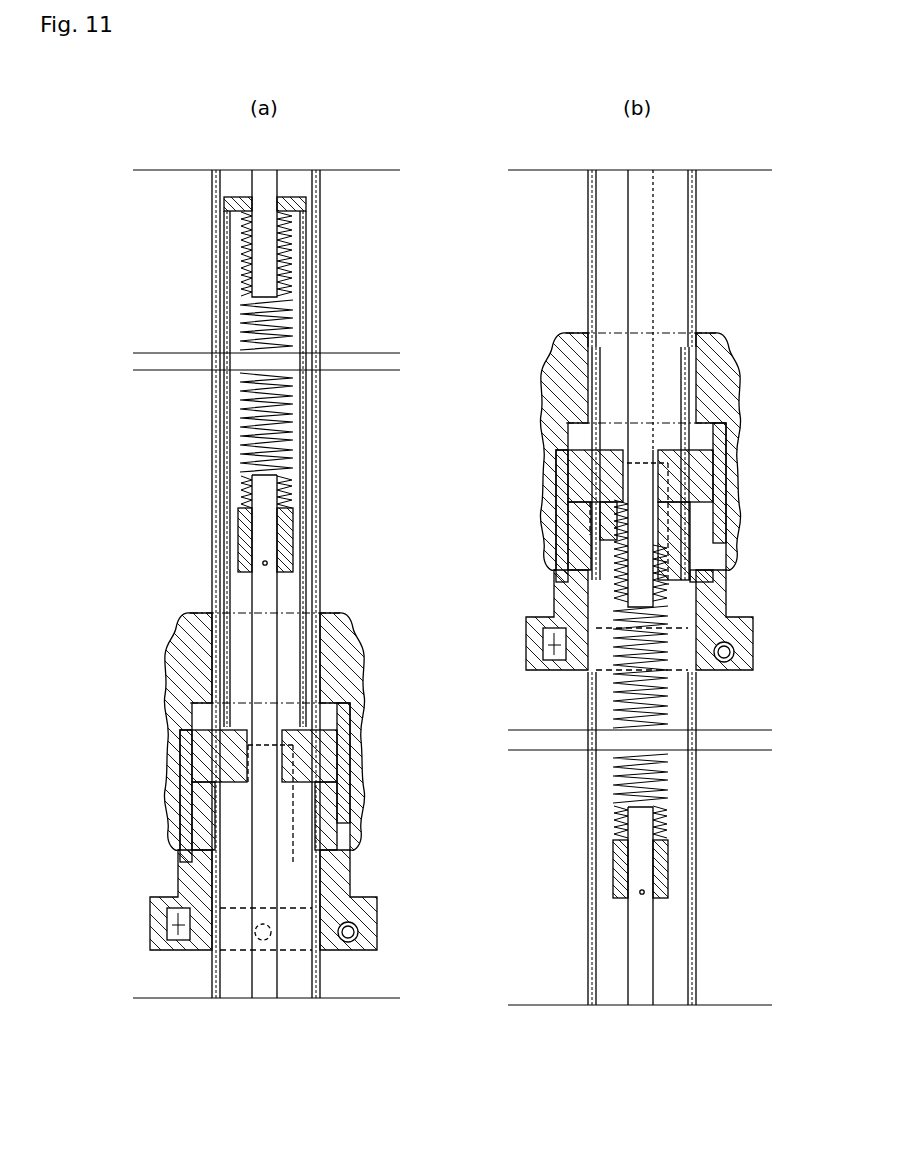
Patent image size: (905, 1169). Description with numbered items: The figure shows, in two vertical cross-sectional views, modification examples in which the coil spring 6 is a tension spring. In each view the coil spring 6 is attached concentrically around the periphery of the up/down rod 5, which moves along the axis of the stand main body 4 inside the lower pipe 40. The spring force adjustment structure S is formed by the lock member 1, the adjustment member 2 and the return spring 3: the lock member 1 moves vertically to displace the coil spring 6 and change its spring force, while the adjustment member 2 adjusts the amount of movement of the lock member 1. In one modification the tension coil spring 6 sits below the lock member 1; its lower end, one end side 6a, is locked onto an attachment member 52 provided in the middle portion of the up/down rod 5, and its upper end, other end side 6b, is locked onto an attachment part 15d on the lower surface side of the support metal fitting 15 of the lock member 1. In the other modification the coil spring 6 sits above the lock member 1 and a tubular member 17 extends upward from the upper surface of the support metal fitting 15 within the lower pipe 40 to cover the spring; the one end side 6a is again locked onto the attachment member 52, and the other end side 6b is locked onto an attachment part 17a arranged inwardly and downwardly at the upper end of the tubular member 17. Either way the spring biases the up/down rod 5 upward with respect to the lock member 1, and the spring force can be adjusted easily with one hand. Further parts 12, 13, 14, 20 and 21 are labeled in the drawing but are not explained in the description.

The lock member 1 is at (360, 667).
The adjustment member 2 is at (350, 880).
The return spring 3 is at (377, 928).
The stand main body 4 is at (504, 587).
The up/down rod 5 is at (272, 590).
The coil spring 6 is at (477, 542).
The one end side 6a is at (291, 548).
The other end side 6b is at (290, 210).
The sleeve portion 12 is at (411, 680).
The sleeve 13 is at (178, 822).
The ring member 14 is at (365, 812).
The support metal fitting 15 is at (496, 656).
The attachment part 15d is at (667, 533).
The tubular member 17 is at (419, 462).
The attachment part 17a is at (243, 233).
The spacer portion 20 is at (338, 639).
The spacer ring 21 is at (190, 768).
The lower pipe 40 is at (320, 257).
The attachment member 52 is at (294, 562).
The spring force adjustment structure S is at (443, 591).